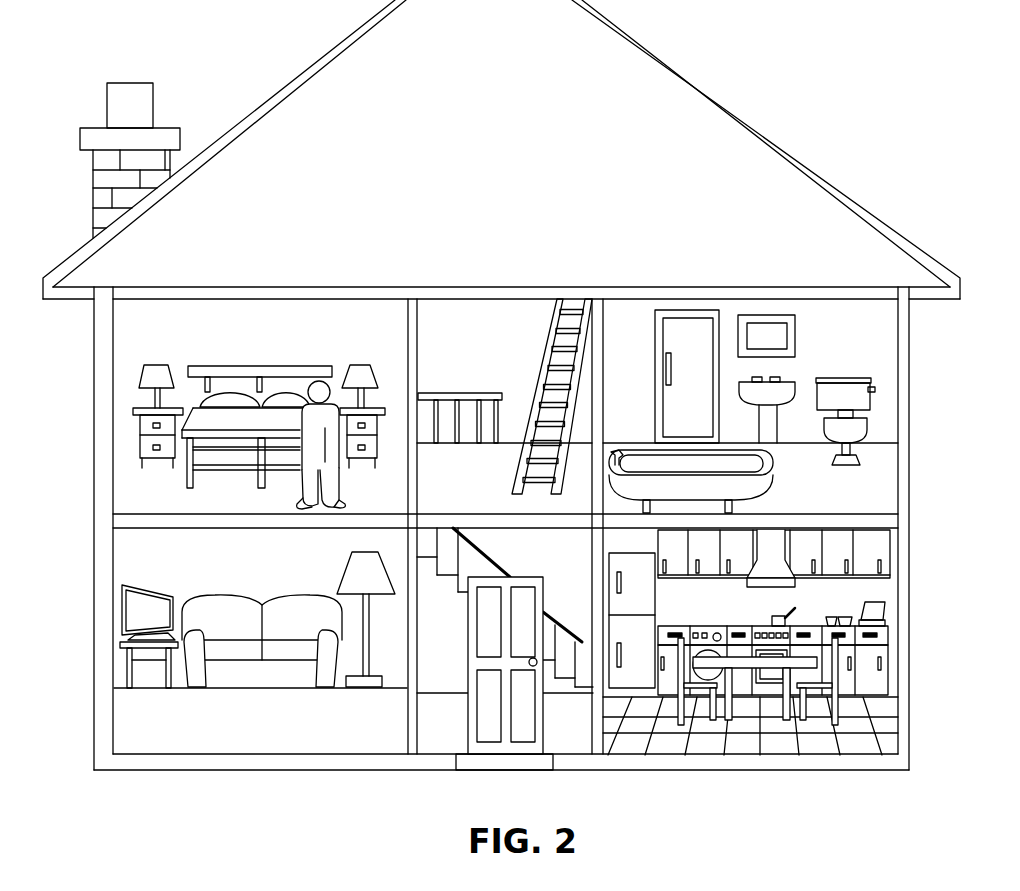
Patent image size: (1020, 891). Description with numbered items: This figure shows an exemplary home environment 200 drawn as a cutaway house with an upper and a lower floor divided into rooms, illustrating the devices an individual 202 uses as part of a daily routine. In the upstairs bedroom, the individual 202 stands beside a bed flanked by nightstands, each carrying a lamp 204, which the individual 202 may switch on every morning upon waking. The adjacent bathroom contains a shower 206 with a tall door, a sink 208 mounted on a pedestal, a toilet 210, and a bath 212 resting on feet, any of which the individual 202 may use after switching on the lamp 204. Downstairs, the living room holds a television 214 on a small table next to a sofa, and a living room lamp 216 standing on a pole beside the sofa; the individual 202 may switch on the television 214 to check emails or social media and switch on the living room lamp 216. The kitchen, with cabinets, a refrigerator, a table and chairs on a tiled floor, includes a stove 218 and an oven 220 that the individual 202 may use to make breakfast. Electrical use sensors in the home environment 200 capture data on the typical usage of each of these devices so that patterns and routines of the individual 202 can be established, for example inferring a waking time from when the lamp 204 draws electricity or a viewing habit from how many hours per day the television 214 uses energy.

The home environment 200 is at (268, 39).
The individual 202 is at (341, 468).
The lamp 204 is at (155, 376).
The shower 206 is at (690, 332).
The sink 208 is at (781, 392).
The toilet 210 is at (857, 393).
The bath 212 is at (618, 448).
The television 214 is at (155, 602).
The living room lamp 216 is at (355, 562).
The stove 218 is at (760, 631).
The oven 220 is at (703, 631).